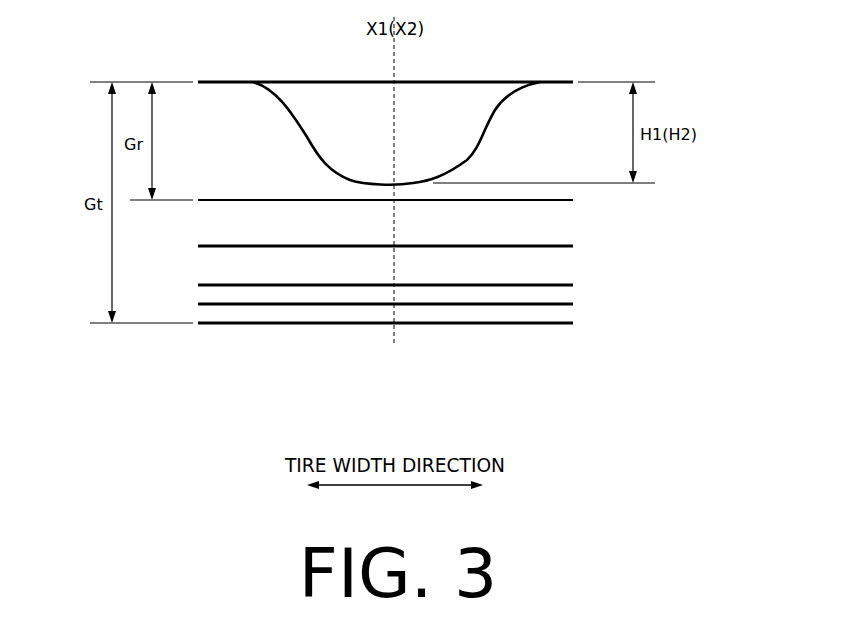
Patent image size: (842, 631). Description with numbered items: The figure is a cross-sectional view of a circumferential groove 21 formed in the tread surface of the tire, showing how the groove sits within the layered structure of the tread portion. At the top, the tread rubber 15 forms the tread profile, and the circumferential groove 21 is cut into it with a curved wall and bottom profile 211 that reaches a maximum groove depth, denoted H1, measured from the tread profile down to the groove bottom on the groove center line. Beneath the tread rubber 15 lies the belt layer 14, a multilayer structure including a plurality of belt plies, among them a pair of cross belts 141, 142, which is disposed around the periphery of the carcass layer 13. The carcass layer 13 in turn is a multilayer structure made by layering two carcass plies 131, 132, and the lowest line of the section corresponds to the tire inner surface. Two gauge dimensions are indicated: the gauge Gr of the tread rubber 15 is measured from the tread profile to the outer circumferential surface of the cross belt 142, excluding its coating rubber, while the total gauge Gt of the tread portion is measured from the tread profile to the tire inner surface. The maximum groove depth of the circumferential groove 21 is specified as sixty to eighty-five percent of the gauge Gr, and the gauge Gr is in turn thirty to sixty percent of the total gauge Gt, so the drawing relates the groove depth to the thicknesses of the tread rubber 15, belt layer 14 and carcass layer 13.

The tread rubber 15 is at (225, 80).
The first circumferential groove 21 is at (444, 76).
The groove wall and bottom (211/221) 211 is at (338, 102).
The belt layer 14 is at (385, 337).
The cross belt 141 is at (293, 285).
The cross belt 142 is at (347, 246).
The carcass layer 13 is at (395, 366).
The carcass ply 131 is at (593, 388).
The carcass ply 132 is at (528, 304).